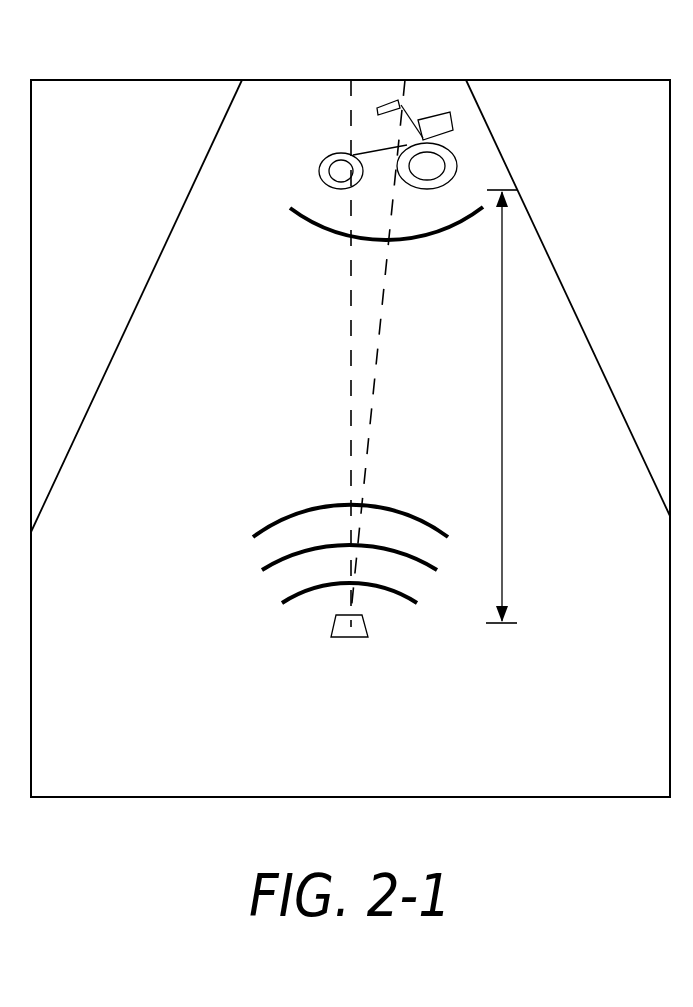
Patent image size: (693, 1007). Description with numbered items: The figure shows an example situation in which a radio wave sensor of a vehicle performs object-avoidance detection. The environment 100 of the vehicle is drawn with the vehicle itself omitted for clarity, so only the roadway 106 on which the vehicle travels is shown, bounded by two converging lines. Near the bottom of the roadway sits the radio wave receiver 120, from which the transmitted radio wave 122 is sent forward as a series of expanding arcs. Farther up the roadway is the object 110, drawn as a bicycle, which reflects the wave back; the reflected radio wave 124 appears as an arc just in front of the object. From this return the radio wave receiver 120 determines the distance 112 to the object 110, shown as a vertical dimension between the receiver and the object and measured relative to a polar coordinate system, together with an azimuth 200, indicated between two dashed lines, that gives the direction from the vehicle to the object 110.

The environment 100 is at (128, 63).
The roadway 106 is at (135, 310).
The object 110 is at (472, 143).
The distance 112 is at (502, 493).
The radio wave receiver 120 is at (358, 628).
The transmitted radio wave 122 is at (280, 503).
The reflected radio wave 124 is at (315, 230).
The azimuth 200 is at (352, 353).